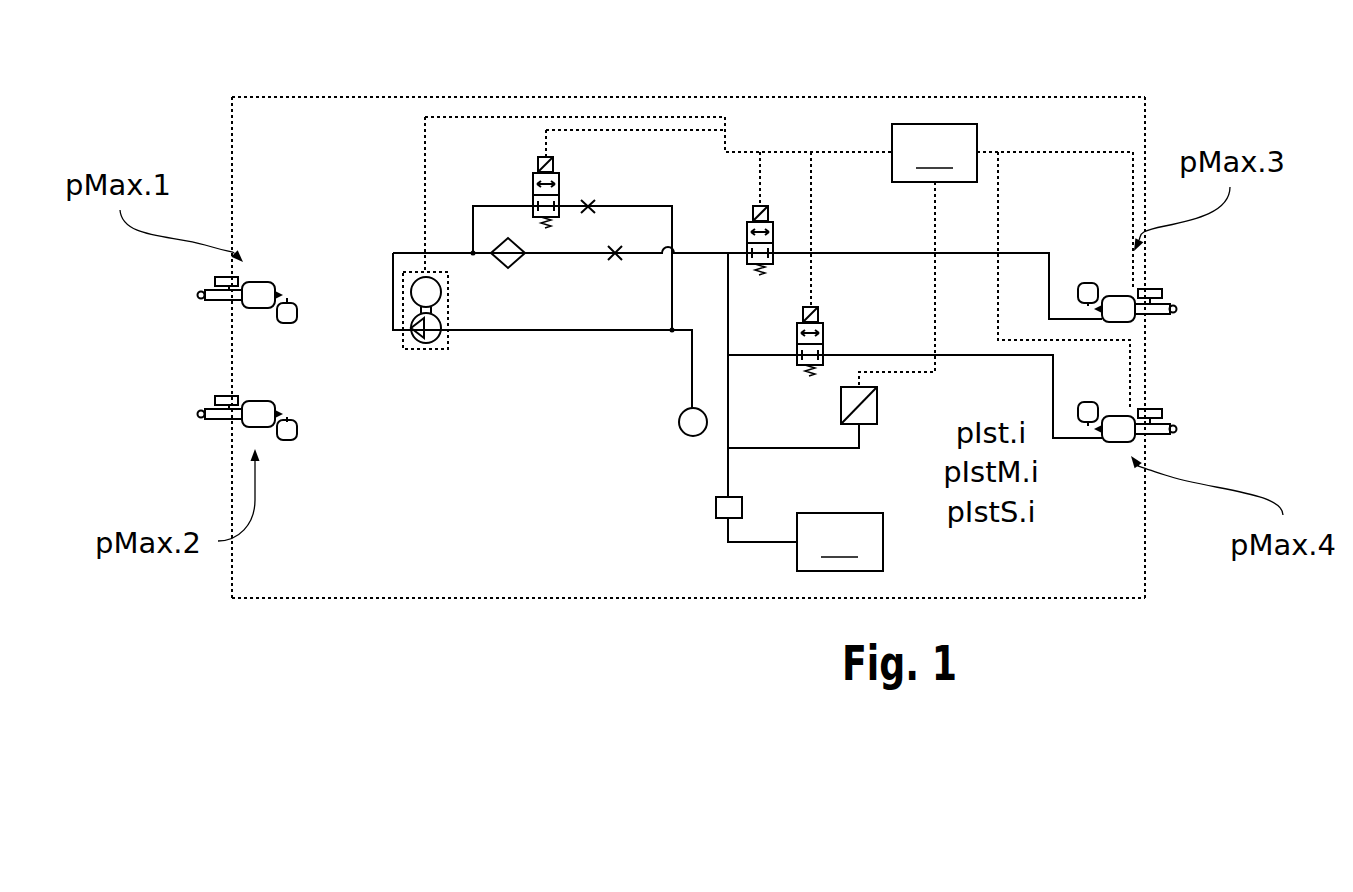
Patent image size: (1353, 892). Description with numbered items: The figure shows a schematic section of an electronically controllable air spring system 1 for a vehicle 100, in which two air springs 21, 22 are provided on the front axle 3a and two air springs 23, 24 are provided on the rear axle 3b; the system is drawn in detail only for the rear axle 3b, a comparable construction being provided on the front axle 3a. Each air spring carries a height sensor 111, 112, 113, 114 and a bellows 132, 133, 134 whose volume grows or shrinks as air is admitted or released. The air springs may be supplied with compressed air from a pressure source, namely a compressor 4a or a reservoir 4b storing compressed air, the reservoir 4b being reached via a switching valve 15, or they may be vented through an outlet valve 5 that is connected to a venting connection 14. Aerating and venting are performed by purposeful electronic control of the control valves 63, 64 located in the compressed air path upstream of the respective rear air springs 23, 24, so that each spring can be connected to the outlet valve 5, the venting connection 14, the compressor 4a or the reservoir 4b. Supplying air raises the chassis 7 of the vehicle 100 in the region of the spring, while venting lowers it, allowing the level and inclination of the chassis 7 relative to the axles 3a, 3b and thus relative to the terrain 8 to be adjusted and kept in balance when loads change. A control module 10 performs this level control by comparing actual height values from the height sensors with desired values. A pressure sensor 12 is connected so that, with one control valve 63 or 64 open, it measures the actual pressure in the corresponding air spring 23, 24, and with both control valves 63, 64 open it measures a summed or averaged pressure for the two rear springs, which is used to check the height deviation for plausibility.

The electronically controllable air spring system 1 is at (323, 202).
The front axle 3a is at (215, 201).
The rear axle 3b is at (1171, 532).
The compressor 4a is at (425, 352).
The reservoir 4b is at (840, 542).
The outlet valve 5 is at (560, 193).
The chassis 7 is at (688, 599).
The terrain 8 is at (1203, 640).
The control module 10 is at (779, 262).
The pressure sensor 12 is at (878, 405).
The venting connection 14 is at (679, 425).
The switching valve 15 is at (716, 507).
The air spring 21 is at (228, 300).
The air spring 22 is at (228, 420).
The air spring 23 is at (1150, 316).
The air spring 24 is at (1150, 440).
The control valve 63 is at (747, 243).
The control valve 64 is at (825, 338).
The vehicle 100 is at (452, 678).
The pressure sensor 111 is at (226, 276).
The pressure sensor 112 is at (228, 396).
The pressure sensor 113 is at (1150, 280).
The pressure sensor 114 is at (1150, 405).
The accumulator 132 is at (269, 386).
The accumulator 133 is at (269, 269).
The accumulator 134 is at (1116, 457).